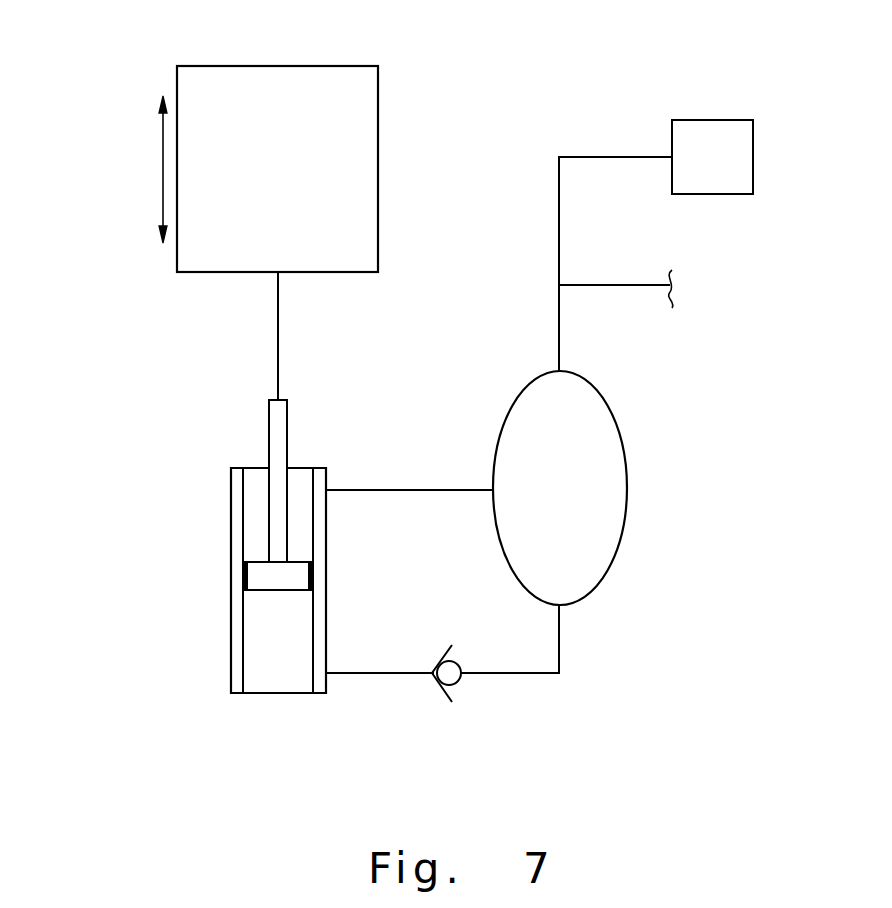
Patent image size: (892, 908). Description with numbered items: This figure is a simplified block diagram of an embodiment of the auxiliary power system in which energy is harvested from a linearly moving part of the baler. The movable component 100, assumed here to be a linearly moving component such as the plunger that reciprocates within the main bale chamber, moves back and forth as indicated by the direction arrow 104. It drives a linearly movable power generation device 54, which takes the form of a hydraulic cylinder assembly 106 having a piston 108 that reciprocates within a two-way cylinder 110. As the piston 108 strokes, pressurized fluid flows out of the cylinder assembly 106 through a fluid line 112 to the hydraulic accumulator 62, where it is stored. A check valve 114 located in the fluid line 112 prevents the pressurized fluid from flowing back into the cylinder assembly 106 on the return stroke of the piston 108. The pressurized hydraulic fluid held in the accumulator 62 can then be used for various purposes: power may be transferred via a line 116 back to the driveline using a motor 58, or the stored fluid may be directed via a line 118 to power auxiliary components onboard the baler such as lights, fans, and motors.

The movable component 100 is at (378, 167).
The direction arrow 104 is at (160, 167).
The motor 58 is at (724, 120).
The line 116 is at (622, 155).
The line 118 is at (623, 285).
The hydraulic accumulator 62 is at (627, 460).
The linearly movable power generation device 54 is at (192, 558).
The hydraulic cylinder assembly 106 is at (192, 558).
The piston 108 is at (255, 592).
The two-way cylinder 110 is at (230, 672).
The fluid line 112 is at (380, 675).
The check valve 114 is at (470, 705).